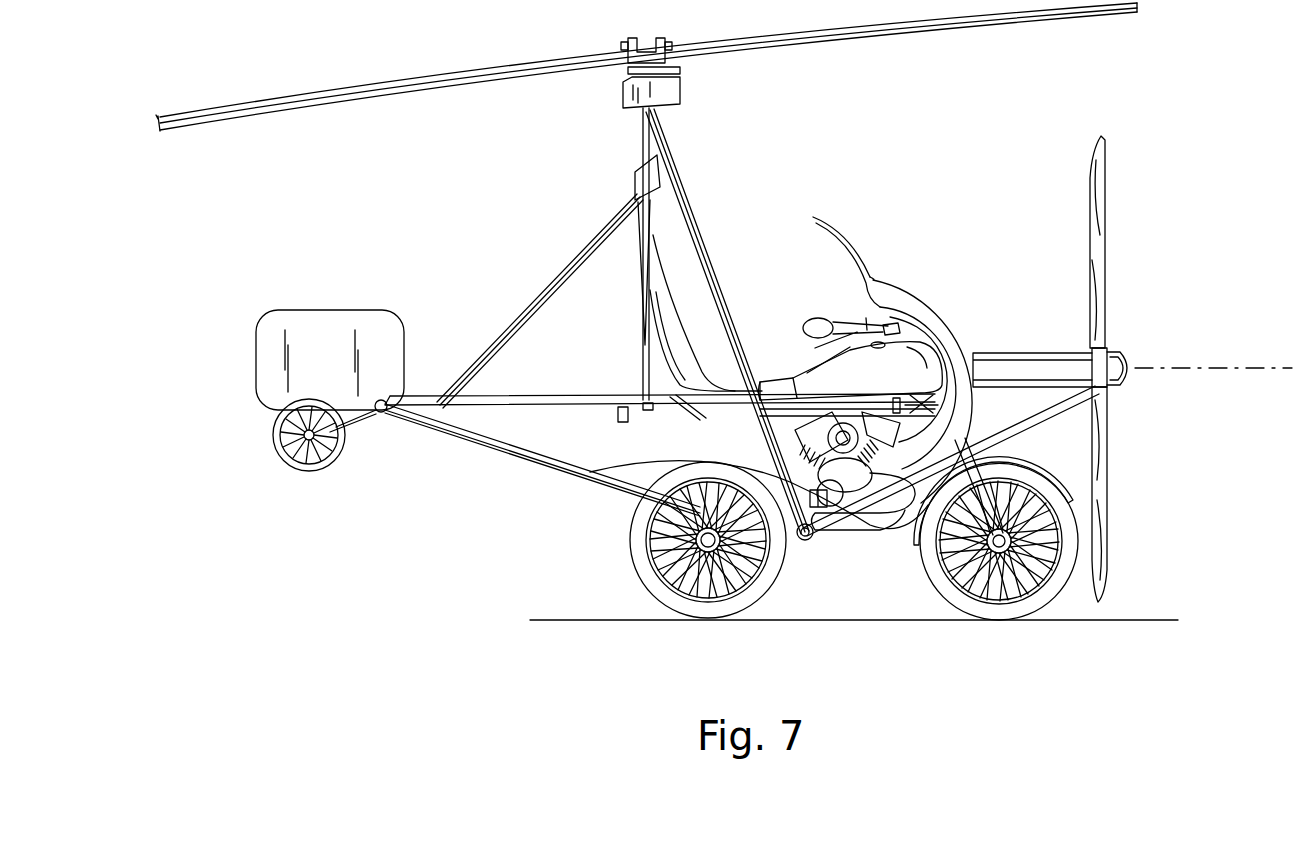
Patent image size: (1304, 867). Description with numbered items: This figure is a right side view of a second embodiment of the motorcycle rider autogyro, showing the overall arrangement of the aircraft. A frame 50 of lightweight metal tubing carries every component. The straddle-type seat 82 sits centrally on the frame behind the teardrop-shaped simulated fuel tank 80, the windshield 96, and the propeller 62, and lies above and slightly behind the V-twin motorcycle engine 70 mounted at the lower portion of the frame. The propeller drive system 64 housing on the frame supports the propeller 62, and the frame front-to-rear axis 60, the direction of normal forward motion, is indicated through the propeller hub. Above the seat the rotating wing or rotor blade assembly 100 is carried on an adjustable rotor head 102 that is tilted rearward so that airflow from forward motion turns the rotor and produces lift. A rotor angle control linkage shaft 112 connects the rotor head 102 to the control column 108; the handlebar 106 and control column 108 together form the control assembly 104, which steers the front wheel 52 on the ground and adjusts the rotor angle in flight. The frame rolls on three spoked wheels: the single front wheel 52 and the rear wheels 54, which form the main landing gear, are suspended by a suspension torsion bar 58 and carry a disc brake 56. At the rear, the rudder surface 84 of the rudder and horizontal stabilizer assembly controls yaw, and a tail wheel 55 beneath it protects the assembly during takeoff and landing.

The frame 50 is at (537, 290).
The front wheel 52 is at (1065, 590).
The rear wheel 54 is at (698, 540).
The tail wheel 55 is at (290, 460).
The brake 56 is at (650, 530).
The suspension torsion bar 58 is at (818, 540).
The frame front-to-rear axis 60 is at (1262, 365).
The propeller 62 is at (1105, 238).
The propeller drive system 64 is at (1017, 375).
The engine 70 is at (887, 430).
The teardrop-shaped simulated fuel tank 80 is at (798, 376).
The straddle-type seat 82 is at (668, 318).
The rudder surface 84 is at (332, 330).
The windshield 96 is at (905, 290).
The rotating wing or rotor blade assembly 100 is at (568, 56).
The rotor head 102 is at (680, 70).
The control assembly 104 is at (858, 325).
The handlebar 106 is at (866, 318).
The control column 108 is at (900, 333).
The rotor angle control linkage shaft 112 is at (640, 128).